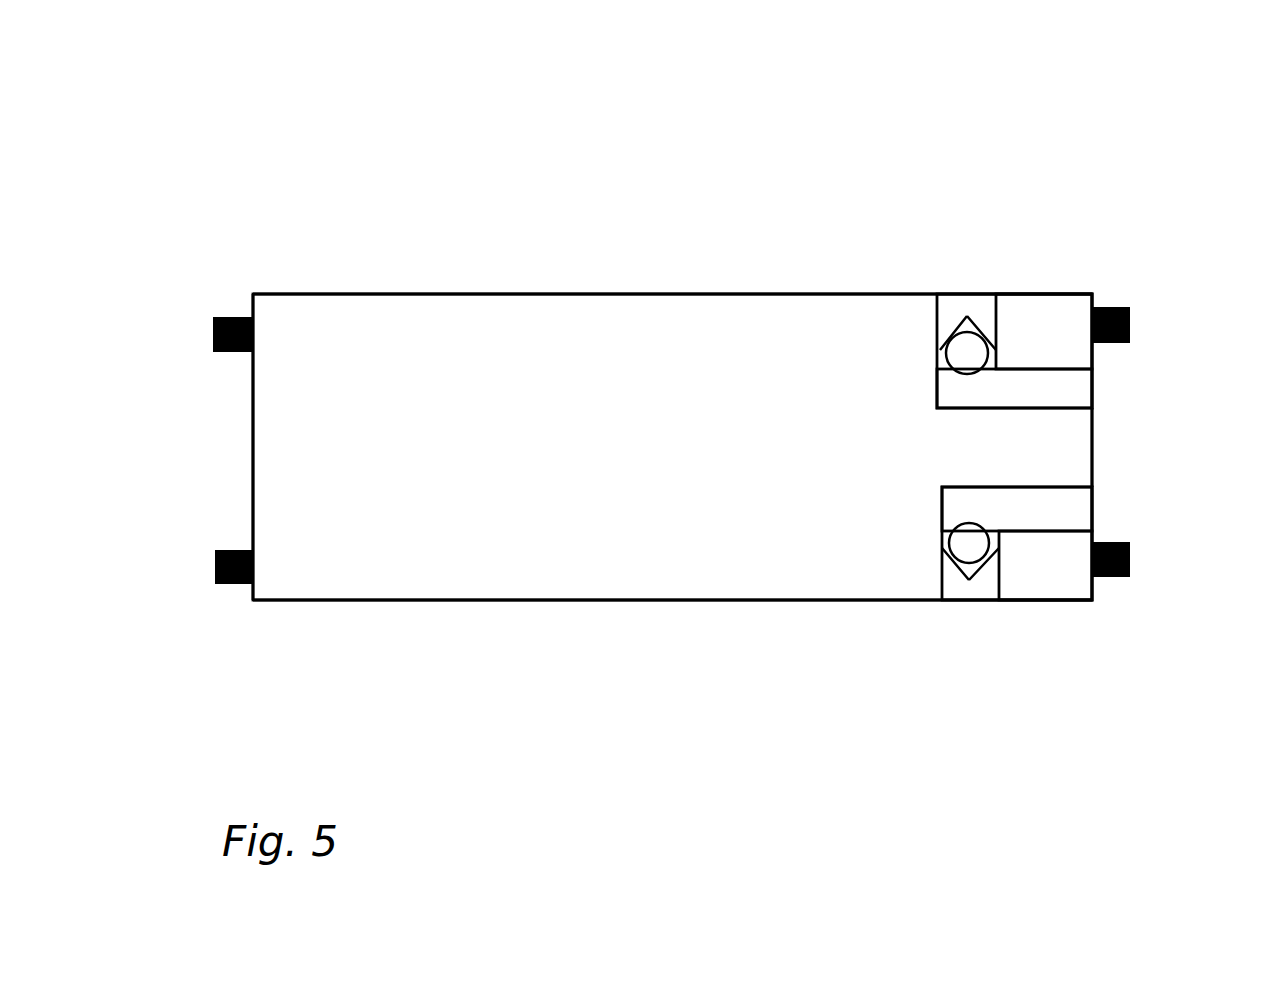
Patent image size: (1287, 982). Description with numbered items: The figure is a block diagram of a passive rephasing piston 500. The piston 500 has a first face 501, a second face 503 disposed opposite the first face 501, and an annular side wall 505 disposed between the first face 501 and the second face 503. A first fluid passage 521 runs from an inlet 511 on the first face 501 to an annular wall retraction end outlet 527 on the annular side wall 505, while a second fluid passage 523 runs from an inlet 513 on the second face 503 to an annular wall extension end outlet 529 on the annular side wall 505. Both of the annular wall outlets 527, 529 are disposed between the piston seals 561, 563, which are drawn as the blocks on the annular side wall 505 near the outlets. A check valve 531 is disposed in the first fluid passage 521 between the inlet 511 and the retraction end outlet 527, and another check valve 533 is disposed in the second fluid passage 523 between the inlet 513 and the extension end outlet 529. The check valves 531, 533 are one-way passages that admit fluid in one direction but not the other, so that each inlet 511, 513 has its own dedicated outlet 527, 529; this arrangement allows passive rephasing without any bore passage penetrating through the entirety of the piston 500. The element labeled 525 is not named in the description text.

The passive rephasing piston 500 is at (1008, 181).
The first face 501 is at (335, 293).
The second face 503 is at (528, 602).
The annular side wall 505 is at (250, 457).
The inlet 511 is at (967, 292).
The inlet 513 is at (960, 602).
The first fluid passage 521 is at (937, 393).
The second fluid passage 523 is at (941, 500).
The lower inner box 525 is at (1077, 600).
The annular wall retraction end outlet 527 is at (1093, 388).
The annular wall extension end outlet 529 is at (1094, 504).
The check valve 531 is at (947, 350).
The check valve 533 is at (945, 545).
The piston seal 561 is at (1110, 307).
The piston seal 563 is at (1131, 553).